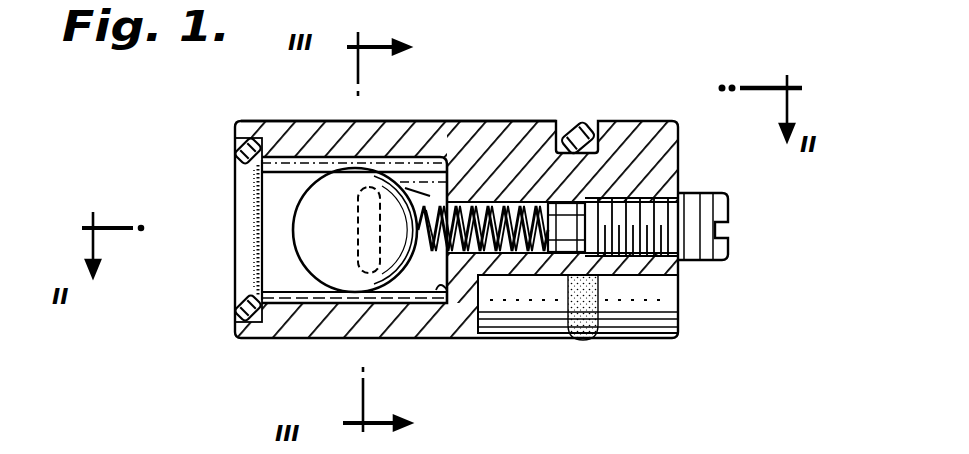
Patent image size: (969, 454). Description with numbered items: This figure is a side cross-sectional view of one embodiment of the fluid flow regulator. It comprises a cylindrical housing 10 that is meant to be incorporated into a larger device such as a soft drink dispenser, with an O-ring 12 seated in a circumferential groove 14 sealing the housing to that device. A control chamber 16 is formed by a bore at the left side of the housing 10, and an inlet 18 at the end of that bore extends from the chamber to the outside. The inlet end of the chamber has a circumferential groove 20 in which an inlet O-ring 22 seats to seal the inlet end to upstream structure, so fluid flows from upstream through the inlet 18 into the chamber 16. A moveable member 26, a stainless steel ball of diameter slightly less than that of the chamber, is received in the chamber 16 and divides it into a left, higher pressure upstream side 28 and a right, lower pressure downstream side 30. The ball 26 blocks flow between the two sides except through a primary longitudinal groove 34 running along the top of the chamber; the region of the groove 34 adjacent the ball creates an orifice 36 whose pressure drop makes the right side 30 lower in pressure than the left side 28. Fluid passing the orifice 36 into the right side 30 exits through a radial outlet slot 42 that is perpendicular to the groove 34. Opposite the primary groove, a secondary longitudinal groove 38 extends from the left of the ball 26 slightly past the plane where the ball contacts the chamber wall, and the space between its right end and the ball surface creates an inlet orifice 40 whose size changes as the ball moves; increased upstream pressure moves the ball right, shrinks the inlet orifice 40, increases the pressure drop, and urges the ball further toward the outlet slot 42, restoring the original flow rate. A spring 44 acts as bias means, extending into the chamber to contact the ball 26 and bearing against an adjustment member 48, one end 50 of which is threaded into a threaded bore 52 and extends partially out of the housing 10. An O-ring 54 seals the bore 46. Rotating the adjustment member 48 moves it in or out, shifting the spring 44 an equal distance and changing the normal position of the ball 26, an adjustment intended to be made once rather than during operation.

The housing 10 is at (676, 91).
The O-ring 12 is at (584, 120).
The circumferential groove 14 is at (573, 119).
The control chamber 16 is at (268, 128).
The inlet 18 is at (200, 197).
The circumferential groove 20 is at (235, 150).
The inlet O-ring 22 is at (235, 308).
The moveable member 26 is at (298, 255).
The upstream side 28 is at (276, 282).
The downstream side 30 is at (447, 278).
The primary longitudinal groove 34 is at (425, 158).
The orifice 36 is at (315, 158).
The secondary longitudinal groove 38 is at (306, 300).
The inlet orifice 40 is at (372, 300).
The outlet slot 42 is at (356, 224).
The spring 44 is at (545, 256).
The bore 46 is at (522, 262).
The adjustment member 48 is at (622, 276).
The end of adjustment member 50 is at (728, 242).
The threaded bore 52 is at (645, 200).
The O-ring 54 is at (637, 305).